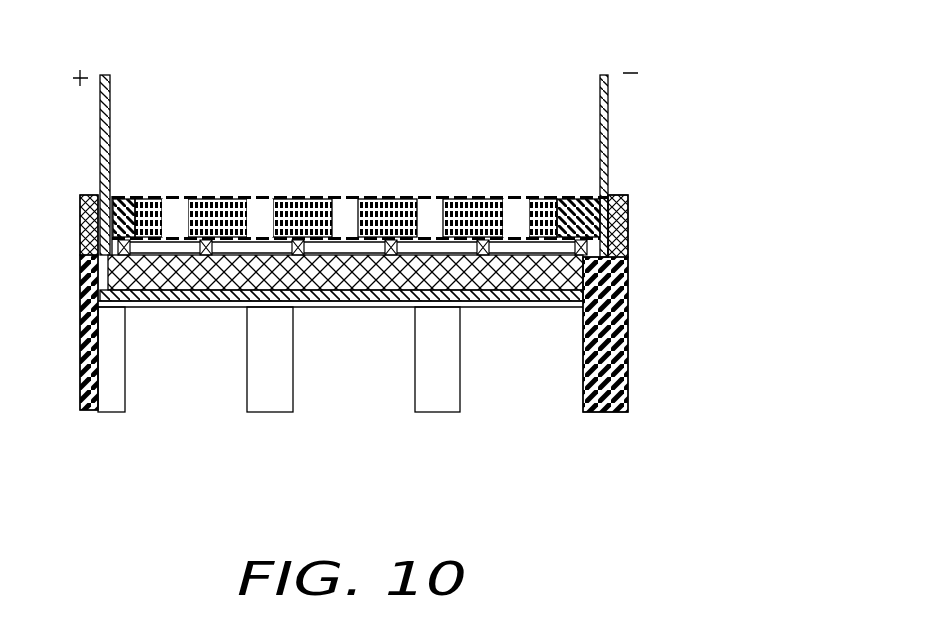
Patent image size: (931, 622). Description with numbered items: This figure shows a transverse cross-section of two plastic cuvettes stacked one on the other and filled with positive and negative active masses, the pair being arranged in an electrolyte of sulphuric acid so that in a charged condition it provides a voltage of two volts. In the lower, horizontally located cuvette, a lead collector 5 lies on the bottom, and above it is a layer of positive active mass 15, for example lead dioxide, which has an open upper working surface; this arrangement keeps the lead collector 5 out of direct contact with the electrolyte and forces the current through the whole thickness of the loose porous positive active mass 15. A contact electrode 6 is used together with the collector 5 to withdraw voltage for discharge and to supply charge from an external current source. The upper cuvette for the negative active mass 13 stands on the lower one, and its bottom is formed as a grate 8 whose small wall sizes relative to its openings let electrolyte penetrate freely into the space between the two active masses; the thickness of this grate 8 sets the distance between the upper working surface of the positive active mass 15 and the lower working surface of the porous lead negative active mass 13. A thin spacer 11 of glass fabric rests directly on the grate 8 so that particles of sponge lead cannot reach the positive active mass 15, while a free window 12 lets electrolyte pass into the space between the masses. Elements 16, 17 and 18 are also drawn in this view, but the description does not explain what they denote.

The collector 5 is at (432, 295).
The contact electrode 6 is at (112, 112).
The grate 8 is at (388, 250).
The spacer 11 is at (167, 233).
The window 12 is at (515, 222).
The negative active mass 13 is at (502, 197).
The positive active mass 15 is at (163, 280).
The cell compartment 16 is at (250, 233).
The cover sheet 17 is at (343, 198).
The negative electrode 18 is at (600, 147).